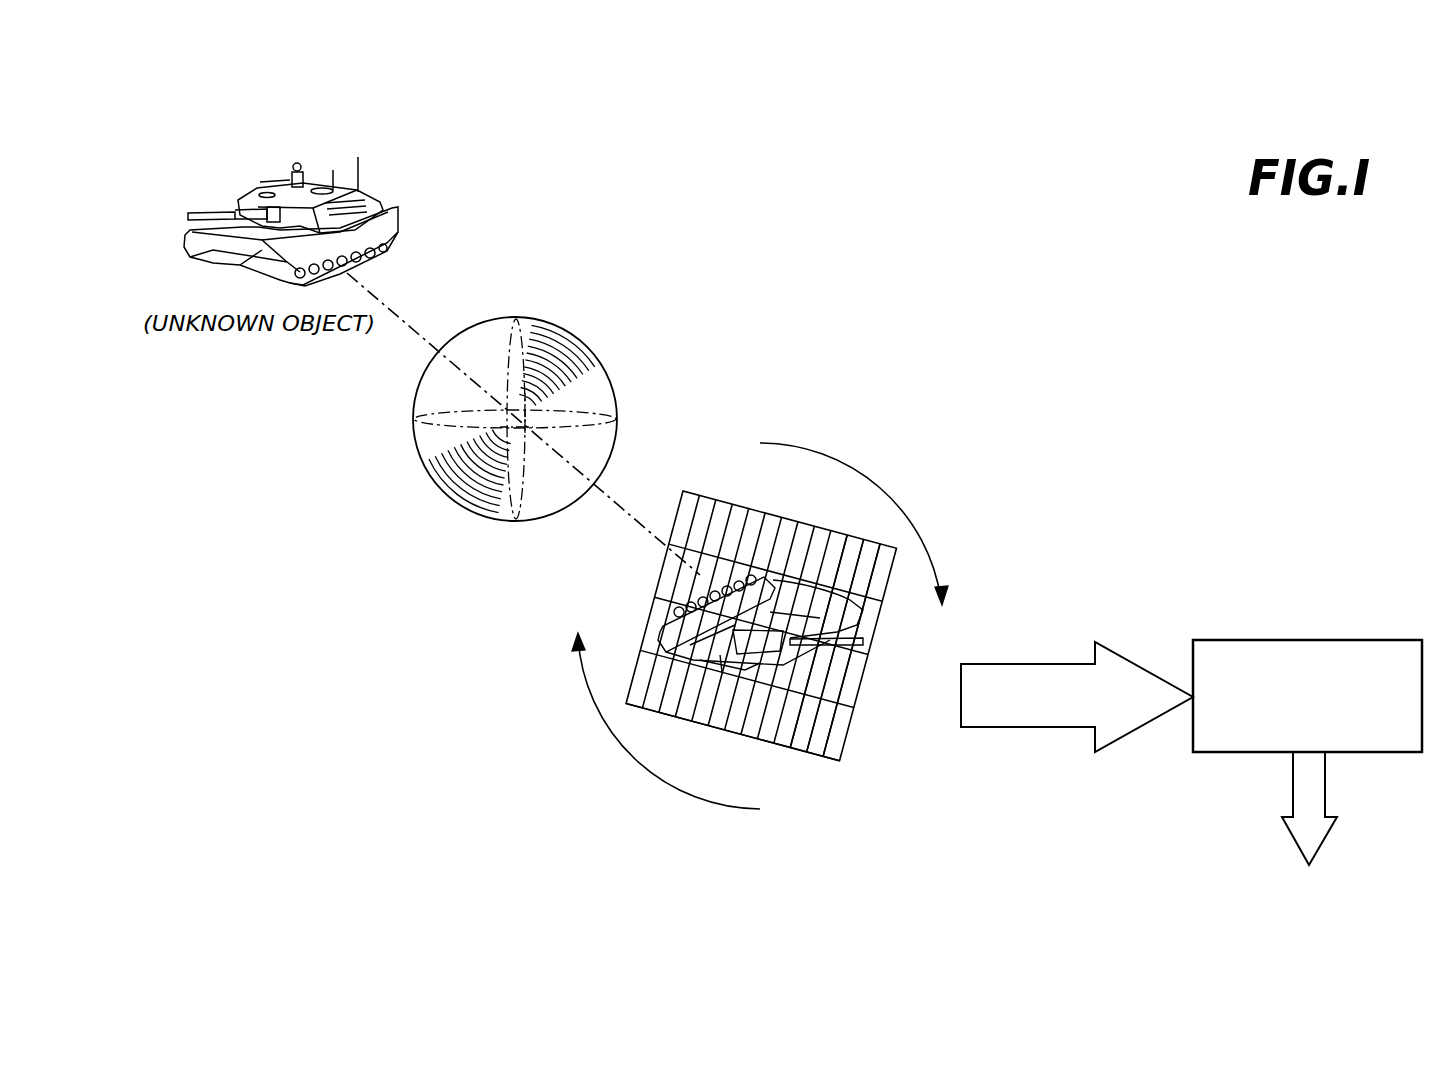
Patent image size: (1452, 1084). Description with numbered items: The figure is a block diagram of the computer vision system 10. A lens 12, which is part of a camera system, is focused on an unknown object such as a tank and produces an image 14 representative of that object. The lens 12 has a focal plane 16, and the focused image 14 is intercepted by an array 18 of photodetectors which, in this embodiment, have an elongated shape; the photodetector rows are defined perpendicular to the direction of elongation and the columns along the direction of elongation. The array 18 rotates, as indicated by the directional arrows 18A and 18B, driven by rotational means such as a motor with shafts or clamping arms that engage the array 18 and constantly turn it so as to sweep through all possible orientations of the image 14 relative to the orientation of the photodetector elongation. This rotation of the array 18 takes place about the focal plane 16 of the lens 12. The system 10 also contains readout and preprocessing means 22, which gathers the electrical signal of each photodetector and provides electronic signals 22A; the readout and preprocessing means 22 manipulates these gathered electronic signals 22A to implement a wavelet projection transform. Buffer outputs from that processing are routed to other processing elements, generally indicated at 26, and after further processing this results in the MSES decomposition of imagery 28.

The computer vision system 10 is at (1054, 309).
The lens 12 is at (598, 362).
The image 14 is at (737, 577).
The focal plane 16 is at (407, 322).
The array of photodetectors 18 is at (692, 469).
The directional arrow 18A is at (613, 735).
The directional arrow 18B is at (873, 481).
The readout and preprocessing means 22 is at (1272, 640).
The electronic signals 22A is at (1028, 663).
The routing of buffer outputs 26 is at (1325, 770).
The MSES decomposition of imagery 28 is at (1312, 911).